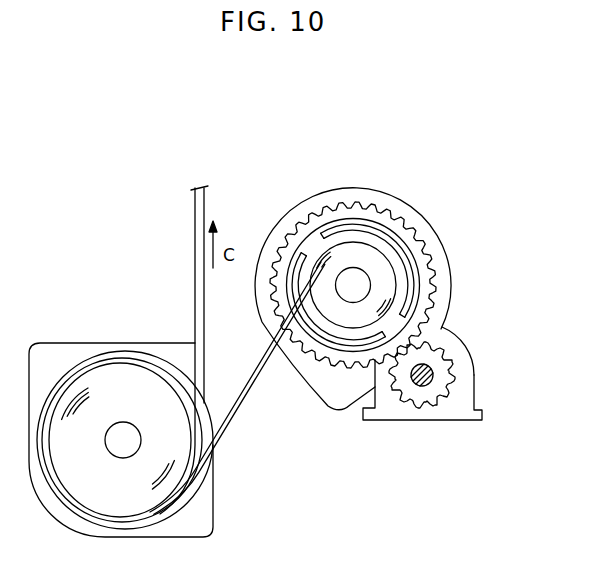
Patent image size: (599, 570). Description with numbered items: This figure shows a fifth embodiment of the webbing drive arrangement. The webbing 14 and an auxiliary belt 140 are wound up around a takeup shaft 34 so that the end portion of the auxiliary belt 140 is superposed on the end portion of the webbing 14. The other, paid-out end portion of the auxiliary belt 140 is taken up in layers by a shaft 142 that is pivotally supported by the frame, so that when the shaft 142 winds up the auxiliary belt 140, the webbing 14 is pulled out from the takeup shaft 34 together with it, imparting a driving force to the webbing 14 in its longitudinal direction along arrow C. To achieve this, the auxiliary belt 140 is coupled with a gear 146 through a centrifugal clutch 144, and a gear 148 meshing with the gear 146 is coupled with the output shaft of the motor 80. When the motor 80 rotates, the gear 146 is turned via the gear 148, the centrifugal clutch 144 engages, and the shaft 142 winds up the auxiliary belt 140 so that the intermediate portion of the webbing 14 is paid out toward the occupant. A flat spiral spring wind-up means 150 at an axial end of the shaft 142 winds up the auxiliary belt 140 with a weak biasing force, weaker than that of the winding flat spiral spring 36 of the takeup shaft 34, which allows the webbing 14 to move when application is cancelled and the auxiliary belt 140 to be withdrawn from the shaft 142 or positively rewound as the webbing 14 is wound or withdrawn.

The webbing 14 is at (195, 269).
The winding flat spiral spring 36 is at (102, 342).
The takeup shaft 34 is at (133, 422).
The auxiliary belt 140 is at (242, 403).
The flat spiral spring wind-up means 150 is at (360, 188).
The gear 146 is at (443, 307).
The centrifugal clutch 144 is at (388, 245).
The shaft 142 is at (371, 281).
The gear 148 is at (455, 372).
The motor 80 is at (455, 393).